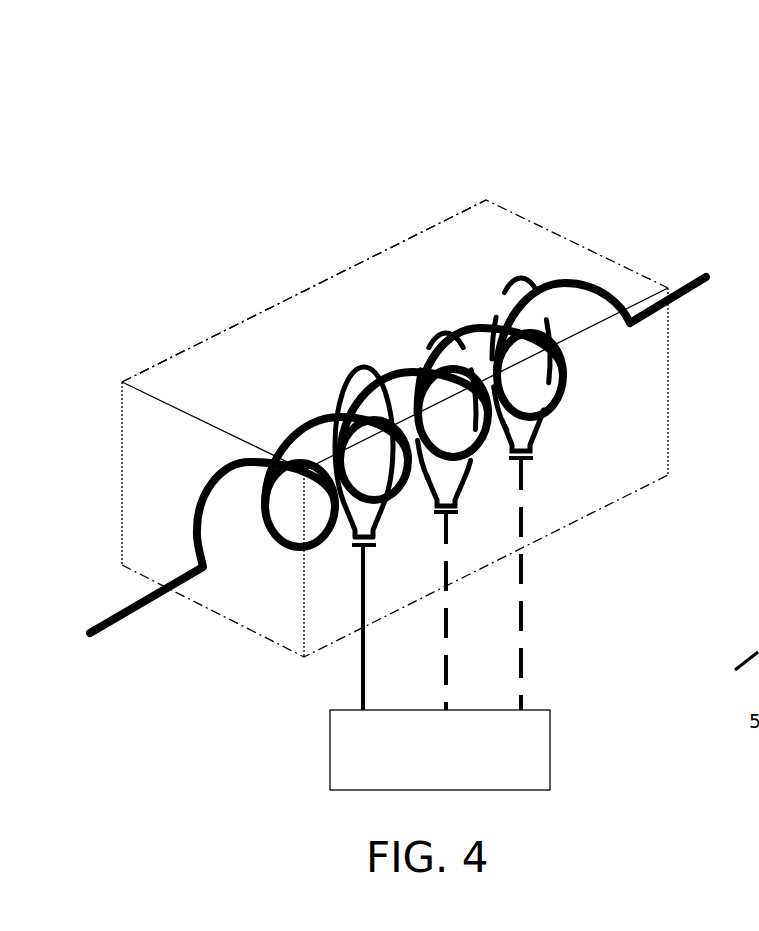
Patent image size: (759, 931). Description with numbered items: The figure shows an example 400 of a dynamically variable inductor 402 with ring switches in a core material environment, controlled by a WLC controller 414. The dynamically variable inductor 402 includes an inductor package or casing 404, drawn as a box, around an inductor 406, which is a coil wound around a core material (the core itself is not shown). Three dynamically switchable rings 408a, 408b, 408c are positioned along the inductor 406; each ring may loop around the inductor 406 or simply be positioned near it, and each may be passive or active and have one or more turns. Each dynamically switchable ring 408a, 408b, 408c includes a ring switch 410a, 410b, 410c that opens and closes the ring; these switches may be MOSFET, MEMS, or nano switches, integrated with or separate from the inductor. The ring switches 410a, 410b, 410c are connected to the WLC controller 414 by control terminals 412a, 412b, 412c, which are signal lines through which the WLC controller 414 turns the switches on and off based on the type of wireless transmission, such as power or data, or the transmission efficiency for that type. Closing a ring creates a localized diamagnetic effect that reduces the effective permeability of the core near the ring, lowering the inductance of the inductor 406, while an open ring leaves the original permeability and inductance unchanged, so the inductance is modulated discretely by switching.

The example 400 is at (186, 168).
The dynamically variable inductor 402 is at (239, 410).
The inductor package or casing 404 is at (302, 290).
The inductor 406 is at (144, 612).
The dynamically switchable ring 408a is at (362, 362).
The dynamically switchable ring 408b is at (440, 330).
The dynamically switchable ring 408c is at (502, 296).
The ring switch 410a is at (375, 548).
The ring switch 410b is at (458, 513).
The ring switch 410c is at (533, 460).
The control terminal 412a is at (365, 683).
The control terminal 412b is at (448, 650).
The control terminal 412c is at (523, 627).
The WLC controller 414 is at (422, 773).